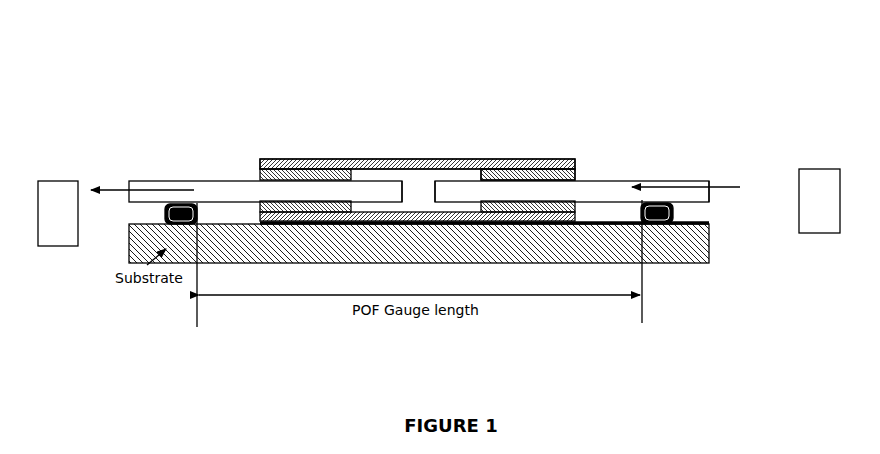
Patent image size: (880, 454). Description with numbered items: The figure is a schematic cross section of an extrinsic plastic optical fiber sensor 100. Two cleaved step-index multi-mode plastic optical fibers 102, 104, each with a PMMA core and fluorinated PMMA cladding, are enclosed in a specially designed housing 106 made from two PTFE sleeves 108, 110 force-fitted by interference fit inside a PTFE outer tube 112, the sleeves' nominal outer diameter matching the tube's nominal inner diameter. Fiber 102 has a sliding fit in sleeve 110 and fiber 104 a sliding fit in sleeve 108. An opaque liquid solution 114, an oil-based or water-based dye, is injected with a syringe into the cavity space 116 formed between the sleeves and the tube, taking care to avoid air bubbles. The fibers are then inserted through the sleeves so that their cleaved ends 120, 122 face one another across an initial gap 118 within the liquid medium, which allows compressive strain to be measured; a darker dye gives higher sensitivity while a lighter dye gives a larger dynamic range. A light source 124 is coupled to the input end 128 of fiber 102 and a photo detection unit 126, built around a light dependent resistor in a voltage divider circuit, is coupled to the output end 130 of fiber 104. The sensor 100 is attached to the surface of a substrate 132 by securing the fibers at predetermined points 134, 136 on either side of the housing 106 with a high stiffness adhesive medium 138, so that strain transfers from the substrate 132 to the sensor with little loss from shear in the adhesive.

The extrinsic POFS 100 is at (634, 80).
The polymer optical fiber 102 is at (672, 172).
The polymer optical fiber 104 is at (168, 173).
The housing 106 is at (429, 138).
The PTFE sleeve 108 is at (260, 174).
The PTFE sleeve 110 is at (578, 166).
The PTFE outer tube 112 is at (403, 158).
The opaque liquid solution 114 is at (420, 177).
The cavity space 116 is at (378, 170).
The gap between fiber ends 118 is at (420, 193).
The cleaved end 120 is at (402, 188).
The cleaved end 122 is at (435, 190).
The light source 124 is at (812, 168).
The photo detection unit 126 is at (50, 175).
The input end 128 is at (713, 177).
The output end 130 is at (128, 183).
The substrate 132 is at (712, 240).
The predetermined point 134 is at (675, 212).
The predetermined point 136 is at (163, 208).
The adhesive medium 138 is at (404, 224).